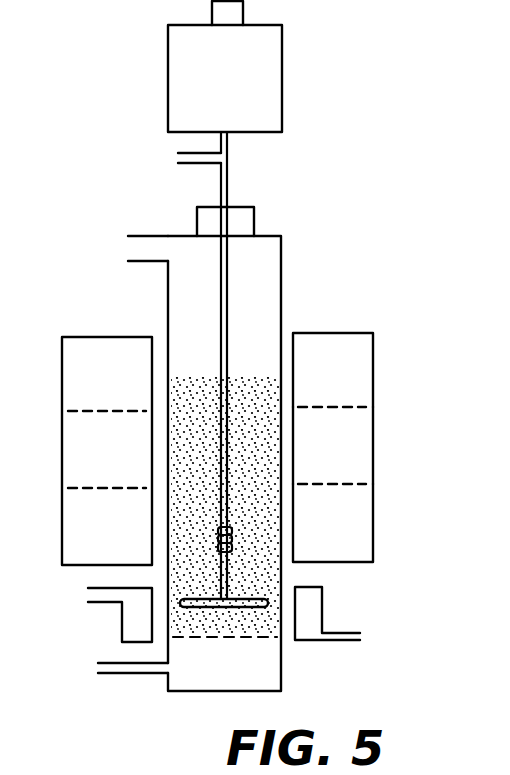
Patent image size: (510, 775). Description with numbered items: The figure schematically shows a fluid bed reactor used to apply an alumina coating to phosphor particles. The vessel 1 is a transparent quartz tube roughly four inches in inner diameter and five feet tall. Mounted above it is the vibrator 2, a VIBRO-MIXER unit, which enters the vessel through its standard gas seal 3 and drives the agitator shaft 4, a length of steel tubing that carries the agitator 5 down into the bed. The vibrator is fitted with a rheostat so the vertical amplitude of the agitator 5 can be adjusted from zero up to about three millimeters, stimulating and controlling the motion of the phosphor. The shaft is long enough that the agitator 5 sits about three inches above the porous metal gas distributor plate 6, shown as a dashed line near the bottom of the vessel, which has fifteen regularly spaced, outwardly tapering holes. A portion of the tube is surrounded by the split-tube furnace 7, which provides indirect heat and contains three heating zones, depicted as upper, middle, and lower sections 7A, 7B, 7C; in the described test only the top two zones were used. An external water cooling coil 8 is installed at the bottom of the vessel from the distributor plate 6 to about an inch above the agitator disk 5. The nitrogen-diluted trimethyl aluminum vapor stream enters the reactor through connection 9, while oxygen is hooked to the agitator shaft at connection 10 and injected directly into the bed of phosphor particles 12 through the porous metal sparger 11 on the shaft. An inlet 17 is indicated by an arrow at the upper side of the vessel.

The vessel 1 is at (282, 273).
The vibrator 2 is at (267, 88).
The gas seal 3 is at (207, 224).
The agitator shaft 4 is at (221, 327).
The agitator 5 is at (181, 601).
The porous metal gas distributor plate 6 is at (222, 640).
The split-tube furnace 7 is at (386, 466).
The upper heating zone 7A is at (362, 380).
The middle heating zone 7B is at (365, 441).
The lower heating zone 7C is at (363, 530).
The external water cooling coil 8 is at (310, 615).
The connection 9 is at (143, 675).
The connection 10 is at (190, 153).
The porous metal sparger 11 is at (218, 543).
The fluidized bed material 12 is at (257, 565).
The feed inlet 17 is at (118, 249).